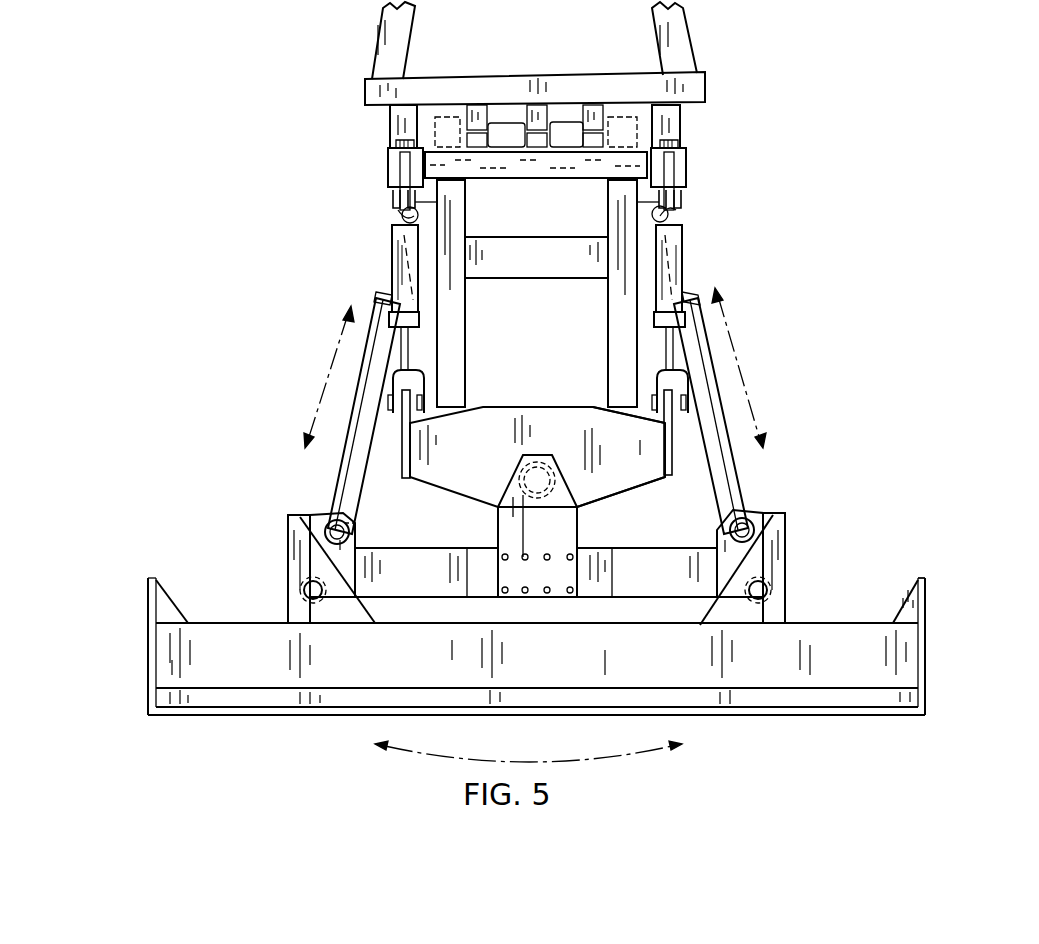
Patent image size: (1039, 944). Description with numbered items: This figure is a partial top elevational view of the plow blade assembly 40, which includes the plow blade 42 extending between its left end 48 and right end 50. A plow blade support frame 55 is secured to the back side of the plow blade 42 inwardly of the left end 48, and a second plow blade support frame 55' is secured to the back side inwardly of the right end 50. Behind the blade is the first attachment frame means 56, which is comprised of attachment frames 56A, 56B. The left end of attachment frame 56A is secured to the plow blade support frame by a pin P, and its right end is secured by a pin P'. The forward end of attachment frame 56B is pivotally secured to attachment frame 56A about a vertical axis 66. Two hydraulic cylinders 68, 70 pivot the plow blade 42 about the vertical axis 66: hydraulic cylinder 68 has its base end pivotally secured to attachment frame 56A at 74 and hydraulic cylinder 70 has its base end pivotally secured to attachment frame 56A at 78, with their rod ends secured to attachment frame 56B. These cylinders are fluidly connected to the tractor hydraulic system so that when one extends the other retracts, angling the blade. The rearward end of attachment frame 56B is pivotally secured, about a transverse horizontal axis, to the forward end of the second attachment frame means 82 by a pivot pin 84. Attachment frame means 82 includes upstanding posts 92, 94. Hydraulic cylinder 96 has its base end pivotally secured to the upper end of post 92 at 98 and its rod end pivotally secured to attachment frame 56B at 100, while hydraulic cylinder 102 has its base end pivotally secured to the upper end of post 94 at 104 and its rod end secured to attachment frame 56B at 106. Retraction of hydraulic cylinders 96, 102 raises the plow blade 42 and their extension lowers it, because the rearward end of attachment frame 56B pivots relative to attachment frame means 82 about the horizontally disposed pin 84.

The plow blade assembly 40 is at (905, 568).
The plow blade 42 is at (278, 710).
The left end 48 is at (928, 693).
The right end 50 is at (147, 651).
The plow blade support frame 55 is at (789, 567).
The plow blade support frame 55' is at (290, 568).
The first attachment frame means 56 is at (396, 493).
The attachment frame 56A is at (668, 546).
The attachment frame 56B is at (652, 440).
The vertical axis 66 is at (565, 482).
The hydraulic cylinder 68 is at (718, 372).
The hydraulic cylinder 70 is at (358, 405).
The base end pivot of hydraulic cylinder 68 74 is at (773, 530).
The base end pivot of hydraulic cylinder 70 78 is at (352, 531).
The pin P is at (789, 593).
The pin P' is at (268, 592).
The second attachment frame means 82 is at (708, 38).
The pivot pin 84 is at (500, 128).
The upstanding post 92 is at (696, 165).
The upstanding post 94 is at (378, 163).
The hydraulic cylinder 96 is at (683, 256).
The base end pivot of hydraulic cylinder 96 98 is at (681, 199).
The rod end pivot of hydraulic cylinder 96 100 is at (700, 392).
The hydraulic cylinder 102 is at (392, 256).
The base end pivot of hydraulic cylinder 102 104 is at (393, 198).
The rod end pivot of hydraulic cylinder 102 106 is at (420, 395).